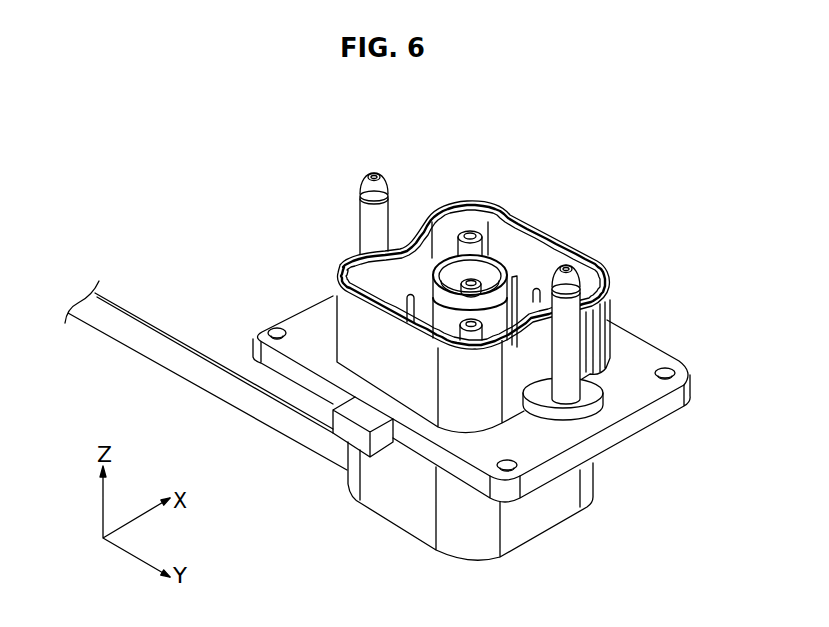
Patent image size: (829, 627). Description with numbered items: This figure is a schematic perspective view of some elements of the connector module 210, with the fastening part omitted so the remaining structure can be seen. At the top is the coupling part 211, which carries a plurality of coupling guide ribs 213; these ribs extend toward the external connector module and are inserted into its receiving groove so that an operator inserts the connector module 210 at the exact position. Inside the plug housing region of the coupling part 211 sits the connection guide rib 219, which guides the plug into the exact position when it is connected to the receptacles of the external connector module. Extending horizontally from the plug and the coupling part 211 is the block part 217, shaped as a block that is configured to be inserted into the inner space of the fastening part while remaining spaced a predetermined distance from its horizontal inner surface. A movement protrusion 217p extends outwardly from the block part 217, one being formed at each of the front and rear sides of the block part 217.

The connector module 210 is at (547, 157).
The coupling part 211 is at (415, 372).
The coupling guide rib 213 is at (366, 171).
The block part 217 is at (635, 422).
The movement protrusion 217p is at (350, 431).
The connection guide rib 219 is at (472, 233).